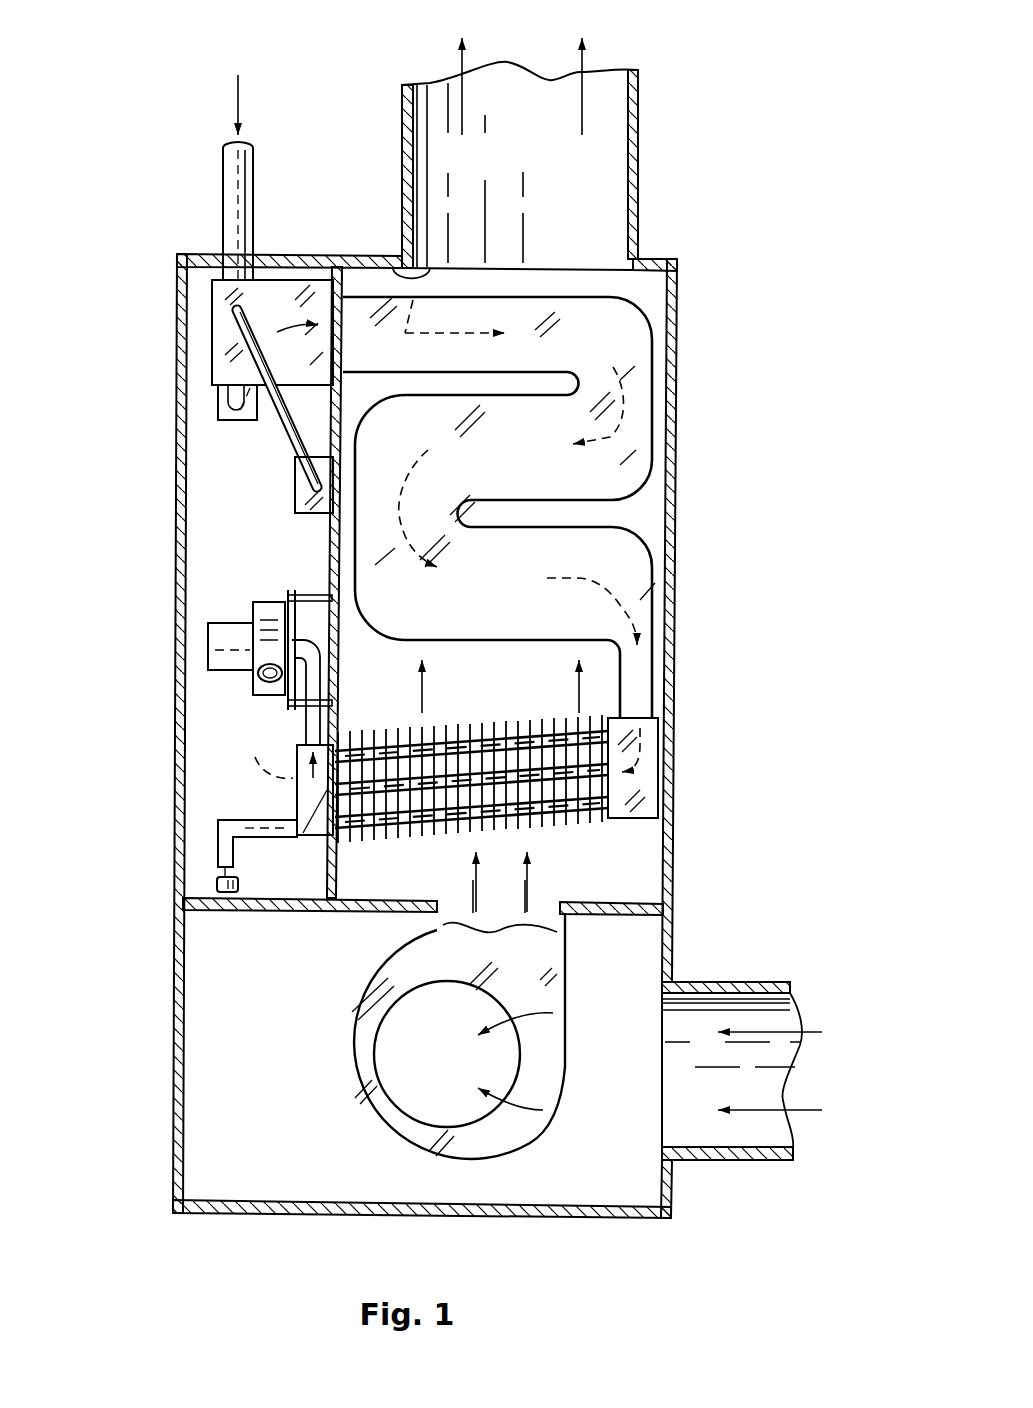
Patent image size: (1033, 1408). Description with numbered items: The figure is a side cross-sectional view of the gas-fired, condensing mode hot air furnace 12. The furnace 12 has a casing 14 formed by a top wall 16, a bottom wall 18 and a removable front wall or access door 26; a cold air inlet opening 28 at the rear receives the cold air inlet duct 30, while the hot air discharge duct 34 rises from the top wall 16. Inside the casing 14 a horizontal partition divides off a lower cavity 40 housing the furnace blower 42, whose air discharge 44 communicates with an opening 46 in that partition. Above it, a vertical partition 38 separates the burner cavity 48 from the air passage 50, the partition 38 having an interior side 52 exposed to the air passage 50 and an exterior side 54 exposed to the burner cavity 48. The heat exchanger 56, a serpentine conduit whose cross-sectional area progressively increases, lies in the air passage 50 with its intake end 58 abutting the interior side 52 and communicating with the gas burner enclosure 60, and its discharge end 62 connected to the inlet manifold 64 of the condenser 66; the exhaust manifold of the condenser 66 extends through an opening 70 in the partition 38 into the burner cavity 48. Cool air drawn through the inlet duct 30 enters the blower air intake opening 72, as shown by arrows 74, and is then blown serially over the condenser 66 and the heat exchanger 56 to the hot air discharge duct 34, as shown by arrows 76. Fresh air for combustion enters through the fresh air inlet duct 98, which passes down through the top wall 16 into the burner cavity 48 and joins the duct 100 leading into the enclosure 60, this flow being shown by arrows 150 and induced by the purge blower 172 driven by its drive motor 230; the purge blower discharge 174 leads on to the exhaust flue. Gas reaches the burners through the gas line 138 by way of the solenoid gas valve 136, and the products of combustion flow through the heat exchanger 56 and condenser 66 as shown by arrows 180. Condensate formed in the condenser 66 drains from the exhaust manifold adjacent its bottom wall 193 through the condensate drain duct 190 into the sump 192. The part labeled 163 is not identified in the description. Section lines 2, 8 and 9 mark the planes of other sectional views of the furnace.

The section line 2- 2 is at (190, 245).
The section line 8- 8 is at (165, 762).
The section line 9- 9 is at (228, 817).
The gas-fired condensing mode hot air furnace 12 is at (12, 522).
The casing 14 is at (452, 735).
The top wall 16 is at (270, 252).
The bottom wall 18 is at (540, 1216).
The front wall or access door 26 is at (177, 558).
The cold air inlet opening 28 is at (660, 983).
The cold air inlet duct 30 is at (705, 982).
The hot air discharge duct 34 is at (640, 140).
The vertical partition 38 is at (442, 268).
The lower cavity 40 is at (231, 1074).
The furnace blower 42 is at (367, 1120).
The air discharge 44 is at (568, 925).
The opening 46 is at (557, 928).
The burner cavity 48 is at (210, 560).
The air passage 50 is at (478, 672).
The interior side 52 is at (330, 490).
The exterior side 54 is at (327, 556).
The heat exchanger 56 is at (493, 447).
The intake end 58 is at (359, 348).
The gas burner enclosure 60 is at (204, 332).
The discharge end 62 is at (640, 663).
The inlet manifold 64 is at (650, 797).
The condenser 66 is at (397, 850).
The opening 70 is at (363, 733).
The blower air intake opening 72 is at (483, 1125).
The arrows 74 is at (523, 1013).
The arrows 76 is at (470, 42).
The fresh air inlet duct 98 is at (247, 165).
The duct 100 is at (218, 400).
The solenoid gas valve 136 is at (297, 490).
The gas line 138 is at (272, 332).
The arrows 150 is at (250, 88).
The gas line elbow 163 is at (330, 652).
The purge blower 172 is at (253, 607).
The discharge 174 is at (262, 680).
The arrows 180 is at (438, 301).
The condensate drain duct 190 is at (283, 843).
The sump 192 is at (213, 845).
The bottom wall 193 is at (317, 838).
The drive motor 230 is at (208, 650).